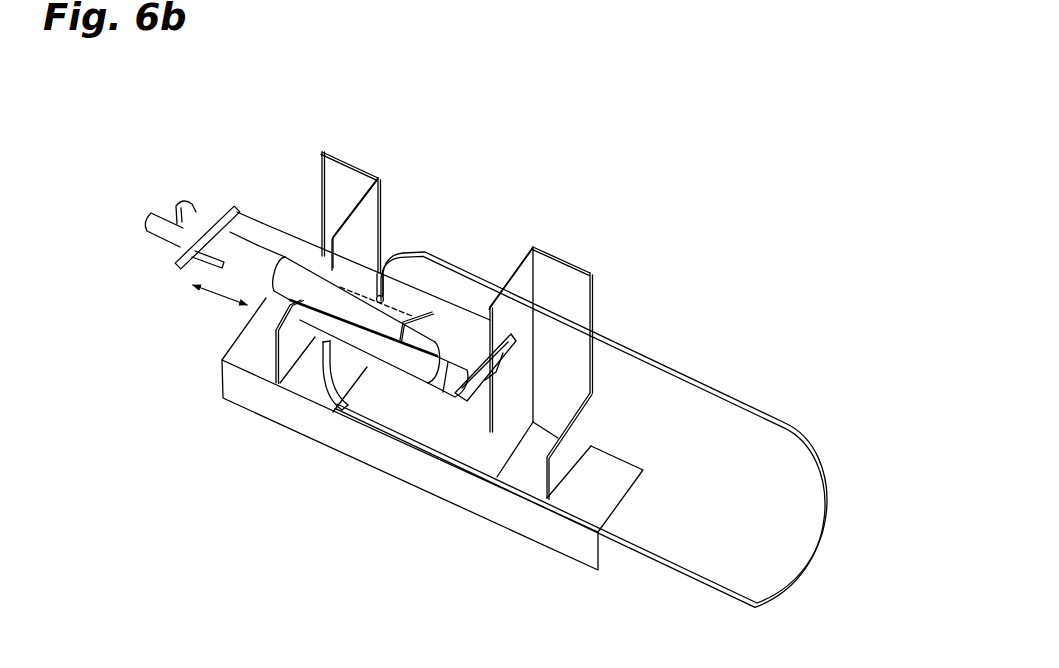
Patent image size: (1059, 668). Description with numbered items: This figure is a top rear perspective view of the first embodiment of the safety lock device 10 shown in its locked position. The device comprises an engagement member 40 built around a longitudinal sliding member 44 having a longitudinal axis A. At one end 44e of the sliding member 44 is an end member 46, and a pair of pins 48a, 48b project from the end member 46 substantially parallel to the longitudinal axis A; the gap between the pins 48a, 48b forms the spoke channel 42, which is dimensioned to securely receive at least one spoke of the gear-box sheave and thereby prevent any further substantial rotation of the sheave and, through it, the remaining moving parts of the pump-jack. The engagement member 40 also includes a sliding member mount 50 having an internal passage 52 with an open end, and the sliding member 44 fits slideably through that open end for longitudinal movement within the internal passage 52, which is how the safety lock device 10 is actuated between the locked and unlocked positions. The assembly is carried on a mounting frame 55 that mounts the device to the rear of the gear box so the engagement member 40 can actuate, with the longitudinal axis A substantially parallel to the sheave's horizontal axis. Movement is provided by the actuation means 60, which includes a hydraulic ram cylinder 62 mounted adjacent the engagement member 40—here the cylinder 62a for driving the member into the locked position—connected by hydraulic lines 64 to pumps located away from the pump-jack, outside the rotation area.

The safety lock device 10 is at (524, 148).
The engagement member 40 is at (142, 292).
The spoke channel 42 is at (153, 203).
The longitudinal sliding member 44 is at (297, 233).
The end of the longitudinal member 44e is at (248, 212).
The end member 46 is at (233, 190).
The pin 48a is at (140, 233).
The pin 48b is at (185, 195).
The sliding member mount 50 is at (470, 343).
The internal passage 52 is at (521, 349).
The mounting frame 55 is at (238, 463).
The actuation means 60 is at (551, 374).
The hydraulic ram cylinder 62 is at (353, 285).
The hydraulic ram cylinder 62a is at (417, 327).
The hydraulic lines 64 is at (445, 250).
The longitudinal axis A is at (217, 300).